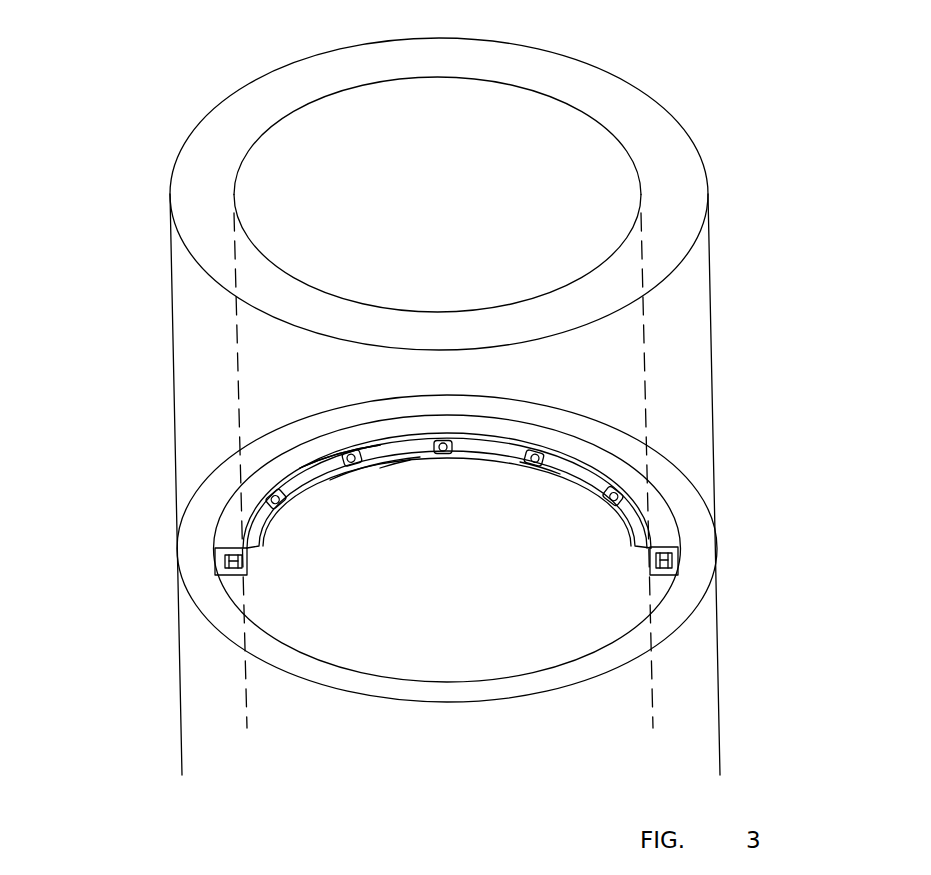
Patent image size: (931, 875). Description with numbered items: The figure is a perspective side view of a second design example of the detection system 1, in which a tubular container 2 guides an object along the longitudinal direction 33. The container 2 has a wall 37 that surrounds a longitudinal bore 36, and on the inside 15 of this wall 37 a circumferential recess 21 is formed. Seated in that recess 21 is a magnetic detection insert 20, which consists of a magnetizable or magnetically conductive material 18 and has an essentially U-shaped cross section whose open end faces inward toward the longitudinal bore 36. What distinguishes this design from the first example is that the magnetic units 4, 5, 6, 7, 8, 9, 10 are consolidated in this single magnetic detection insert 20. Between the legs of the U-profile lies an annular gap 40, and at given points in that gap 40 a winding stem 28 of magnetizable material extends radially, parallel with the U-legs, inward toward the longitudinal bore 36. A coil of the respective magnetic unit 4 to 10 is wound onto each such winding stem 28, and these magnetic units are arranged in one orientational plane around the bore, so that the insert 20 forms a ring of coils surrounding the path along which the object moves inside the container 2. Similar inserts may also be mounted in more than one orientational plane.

The detection system 1 is at (742, 72).
The container 2 is at (712, 386).
The magnetic unit 4 is at (443, 477).
The magnetic unit 5 is at (362, 485).
The magnetic unit 6 is at (293, 516).
The magnetic unit 7 is at (260, 563).
The magnetic unit 8 is at (631, 564).
The magnetic unit 9 is at (596, 512).
The magnetic unit 10 is at (516, 483).
The inside 15 is at (383, 304).
The magnetizable or magnetically conductive material 18 is at (361, 434).
The magnetic detection insert 20 is at (361, 434).
The circumferential recess 21 is at (237, 590).
The winding stem 28 is at (393, 465).
The longitudinal direction 33 is at (157, 432).
The longitudinal bore 36 is at (448, 108).
The wall 37 is at (668, 153).
The annular gap 40 is at (395, 452).